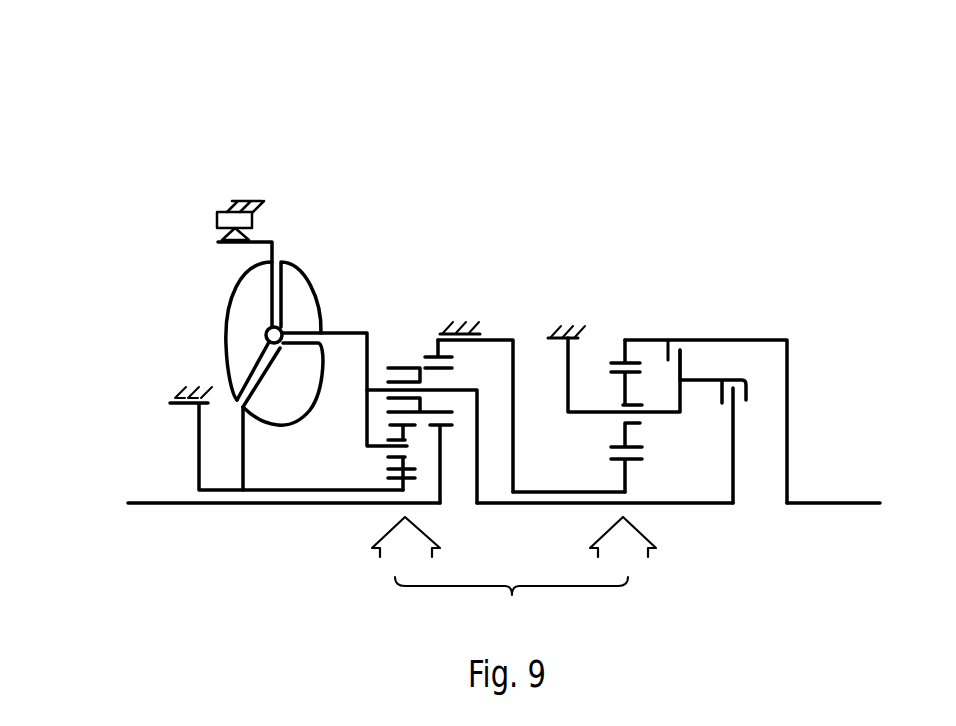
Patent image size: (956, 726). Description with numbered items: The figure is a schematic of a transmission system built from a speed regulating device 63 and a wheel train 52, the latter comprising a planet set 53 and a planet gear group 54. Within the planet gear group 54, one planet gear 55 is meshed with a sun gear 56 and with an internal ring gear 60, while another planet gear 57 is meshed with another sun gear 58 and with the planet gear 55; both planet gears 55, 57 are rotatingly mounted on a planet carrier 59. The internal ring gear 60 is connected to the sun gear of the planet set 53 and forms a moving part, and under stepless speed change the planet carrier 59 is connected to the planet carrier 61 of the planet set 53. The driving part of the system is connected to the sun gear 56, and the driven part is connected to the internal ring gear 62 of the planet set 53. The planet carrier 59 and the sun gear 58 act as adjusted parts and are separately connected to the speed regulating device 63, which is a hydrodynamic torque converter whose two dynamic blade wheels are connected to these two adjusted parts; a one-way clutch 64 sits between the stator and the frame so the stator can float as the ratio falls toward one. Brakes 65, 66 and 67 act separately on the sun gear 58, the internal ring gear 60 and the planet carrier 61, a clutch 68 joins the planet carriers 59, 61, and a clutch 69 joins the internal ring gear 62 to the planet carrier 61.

The wheel train 52 is at (511, 604).
The planet set 53 is at (623, 541).
The planet gear group 54 is at (406, 541).
The planet gear 55 is at (403, 368).
The sun gear 56 is at (442, 436).
The planet gear 57 is at (403, 458).
The sun gear 58 is at (403, 485).
The planet carrier 59 is at (342, 333).
The internal ring gear 60 is at (484, 338).
The planet carrier 61 is at (570, 363).
The internal ring gear 62 is at (790, 400).
The speed regulating device 63 is at (215, 333).
The one-way clutch 64 is at (218, 212).
The brake 65 is at (198, 388).
The brake 66 is at (447, 330).
The brake 67 is at (572, 318).
The clutch 68 is at (747, 382).
The clutch 69 is at (692, 358).